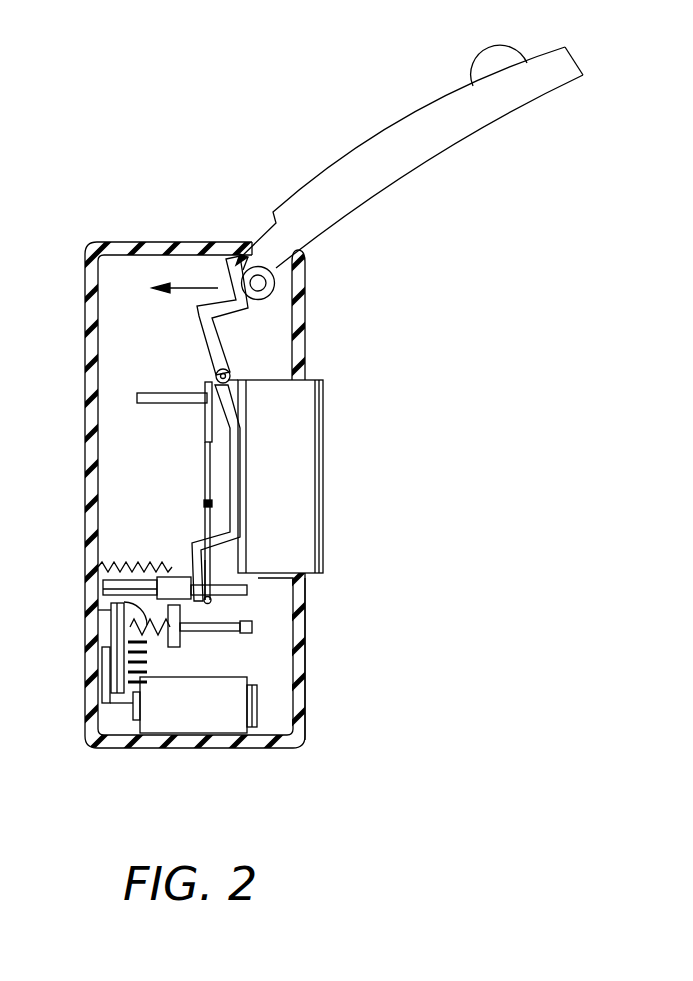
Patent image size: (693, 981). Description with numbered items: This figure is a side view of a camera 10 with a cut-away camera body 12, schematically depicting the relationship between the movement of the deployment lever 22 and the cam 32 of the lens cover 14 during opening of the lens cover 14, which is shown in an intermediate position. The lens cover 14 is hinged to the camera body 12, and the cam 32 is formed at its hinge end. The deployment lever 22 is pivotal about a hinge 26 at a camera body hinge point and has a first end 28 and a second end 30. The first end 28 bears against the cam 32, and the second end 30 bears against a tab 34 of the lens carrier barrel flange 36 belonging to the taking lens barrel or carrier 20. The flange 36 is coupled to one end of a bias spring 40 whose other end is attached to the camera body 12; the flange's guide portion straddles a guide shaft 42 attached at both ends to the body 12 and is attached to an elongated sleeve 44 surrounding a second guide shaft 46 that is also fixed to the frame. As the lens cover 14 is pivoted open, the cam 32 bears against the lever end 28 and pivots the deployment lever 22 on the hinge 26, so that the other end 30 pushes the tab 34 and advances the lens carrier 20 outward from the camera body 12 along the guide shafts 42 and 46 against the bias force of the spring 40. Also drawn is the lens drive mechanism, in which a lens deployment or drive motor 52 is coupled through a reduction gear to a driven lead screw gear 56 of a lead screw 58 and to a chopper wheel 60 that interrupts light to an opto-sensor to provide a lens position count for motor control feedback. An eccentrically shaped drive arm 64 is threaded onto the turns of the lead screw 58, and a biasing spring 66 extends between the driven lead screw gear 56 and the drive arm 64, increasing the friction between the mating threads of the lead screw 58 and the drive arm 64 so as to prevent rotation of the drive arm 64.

The camera 10 is at (353, 515).
The camera body 12 is at (138, 243).
The lens cover 14 is at (422, 142).
The taking lens barrel or carrier 20 is at (302, 403).
The deployment lever 22 is at (238, 470).
The hinge 26 is at (229, 371).
The first end 28 is at (226, 262).
The second end 30 is at (193, 540).
The cam 32 is at (276, 284).
The tab 34 is at (212, 600).
The lens carrier barrel flange 36 is at (208, 441).
The bias spring 40 is at (102, 573).
The guide shaft 42 is at (154, 392).
The elongated sleeve 44 is at (176, 565).
The second guide shaft 46 is at (248, 585).
The lens deployment or drive motor 52 is at (208, 725).
The driven lead screw gear 56 is at (112, 612).
The lead screw 58 is at (237, 633).
The chopper wheel 60 is at (102, 660).
The drive arm 64 is at (176, 645).
The biasing spring 66 is at (110, 611).